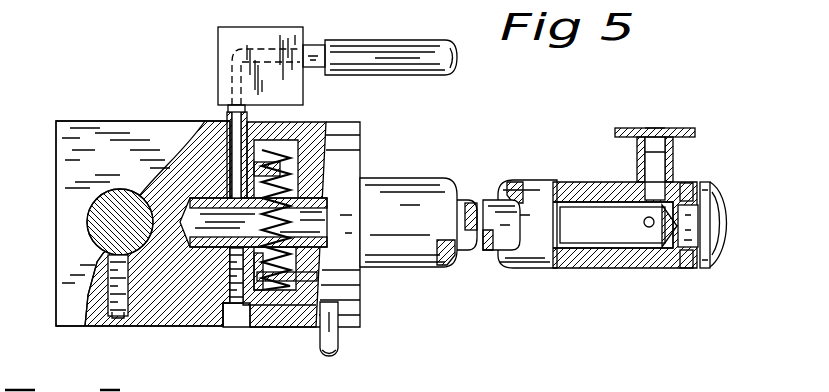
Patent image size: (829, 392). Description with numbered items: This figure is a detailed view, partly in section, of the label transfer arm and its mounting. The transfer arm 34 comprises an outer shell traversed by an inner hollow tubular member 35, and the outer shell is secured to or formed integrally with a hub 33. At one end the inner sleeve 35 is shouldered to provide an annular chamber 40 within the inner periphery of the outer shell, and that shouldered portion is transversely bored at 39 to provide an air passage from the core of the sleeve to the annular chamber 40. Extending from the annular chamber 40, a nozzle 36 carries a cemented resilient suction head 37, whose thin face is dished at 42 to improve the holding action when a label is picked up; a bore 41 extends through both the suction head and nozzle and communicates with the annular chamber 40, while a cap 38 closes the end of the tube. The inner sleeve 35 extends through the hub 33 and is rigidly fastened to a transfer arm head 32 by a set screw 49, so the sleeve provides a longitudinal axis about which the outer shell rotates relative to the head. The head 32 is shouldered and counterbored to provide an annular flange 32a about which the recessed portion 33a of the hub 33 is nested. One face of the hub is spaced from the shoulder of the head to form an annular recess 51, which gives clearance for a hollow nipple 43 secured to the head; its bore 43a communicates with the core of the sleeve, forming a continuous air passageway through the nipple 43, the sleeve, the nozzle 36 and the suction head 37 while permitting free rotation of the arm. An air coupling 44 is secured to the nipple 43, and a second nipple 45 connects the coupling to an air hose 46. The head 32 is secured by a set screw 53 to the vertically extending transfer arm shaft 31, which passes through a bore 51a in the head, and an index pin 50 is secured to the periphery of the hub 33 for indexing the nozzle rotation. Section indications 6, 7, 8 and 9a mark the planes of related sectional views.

The transfer arm shaft 31 is at (98, 217).
The transfer arm head 32 is at (134, 121).
The annular flange 32a is at (242, 312).
The hub 33 is at (338, 122).
The recessed portion 33a is at (270, 312).
The transfer arm 34 is at (528, 270).
The inner hollow tubular member 35 is at (497, 244).
The nozzle 36 is at (673, 170).
The resilient suction head 37 is at (693, 137).
The cap 38 is at (702, 268).
The transverse bore 39 is at (644, 222).
The annular chamber 40 is at (629, 180).
The bore 41 is at (660, 160).
The dished face 42 is at (656, 131).
The hollow nipple 43 is at (227, 110).
The bore 43a is at (227, 117).
The air coupling 44 is at (244, 30).
The second nipple 45 is at (312, 44).
The air hose 46 is at (375, 40).
The set screw 49 is at (236, 306).
The index pin 50 is at (340, 345).
The annular recess 51 is at (228, 316).
The bore 51a is at (92, 228).
The set screw 53 is at (128, 314).
The section line 6 is at (656, 88).
The section line 7 is at (722, 115).
The section line 8 is at (282, 106).
The section line 9a is at (775, 97).